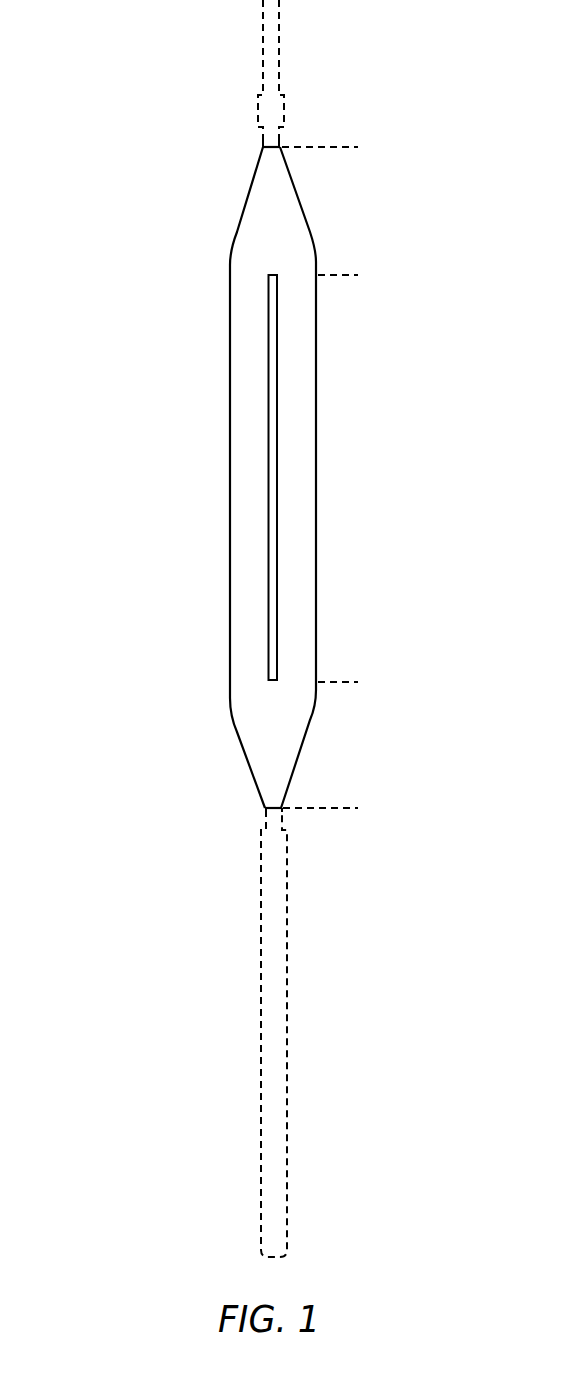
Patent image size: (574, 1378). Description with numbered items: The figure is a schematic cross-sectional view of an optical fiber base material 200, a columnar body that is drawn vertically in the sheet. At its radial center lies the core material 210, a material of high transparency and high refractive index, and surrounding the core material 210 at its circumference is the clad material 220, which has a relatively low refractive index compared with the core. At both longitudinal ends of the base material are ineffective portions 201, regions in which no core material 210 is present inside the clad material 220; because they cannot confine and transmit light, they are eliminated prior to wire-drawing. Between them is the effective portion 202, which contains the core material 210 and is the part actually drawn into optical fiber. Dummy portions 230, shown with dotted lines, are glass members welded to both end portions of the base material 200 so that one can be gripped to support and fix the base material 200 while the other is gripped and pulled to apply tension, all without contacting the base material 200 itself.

The optical fiber base material 200 is at (192, 477).
The ineffective portion 201 is at (356, 148).
The effective portion 202 is at (356, 276).
The core material 210 is at (207, 477).
The clad material 220 is at (238, 215).
The dummy portion 230 is at (263, 40).